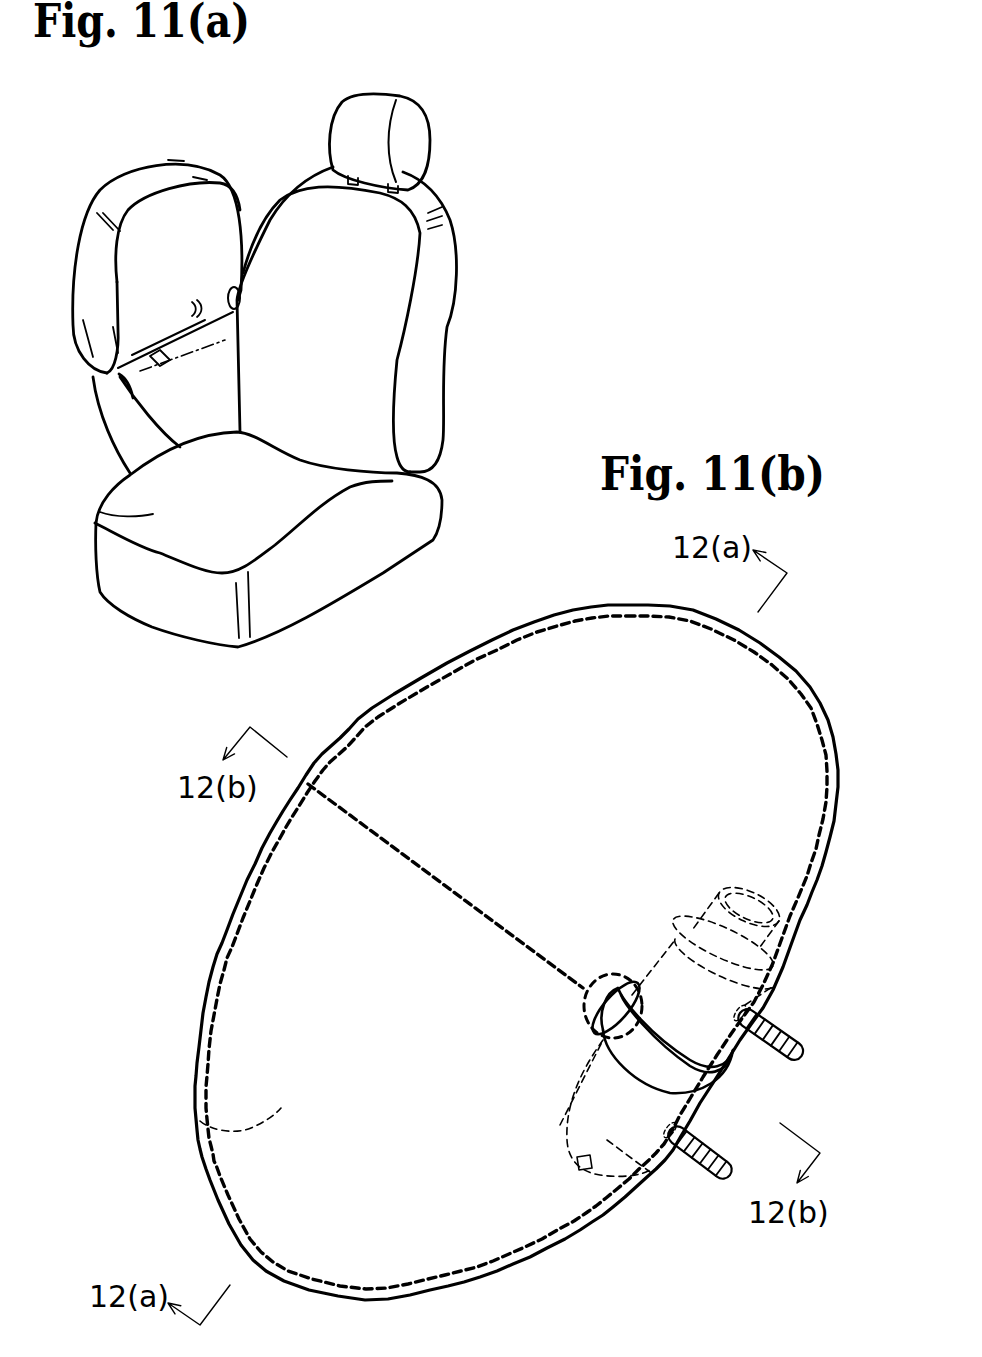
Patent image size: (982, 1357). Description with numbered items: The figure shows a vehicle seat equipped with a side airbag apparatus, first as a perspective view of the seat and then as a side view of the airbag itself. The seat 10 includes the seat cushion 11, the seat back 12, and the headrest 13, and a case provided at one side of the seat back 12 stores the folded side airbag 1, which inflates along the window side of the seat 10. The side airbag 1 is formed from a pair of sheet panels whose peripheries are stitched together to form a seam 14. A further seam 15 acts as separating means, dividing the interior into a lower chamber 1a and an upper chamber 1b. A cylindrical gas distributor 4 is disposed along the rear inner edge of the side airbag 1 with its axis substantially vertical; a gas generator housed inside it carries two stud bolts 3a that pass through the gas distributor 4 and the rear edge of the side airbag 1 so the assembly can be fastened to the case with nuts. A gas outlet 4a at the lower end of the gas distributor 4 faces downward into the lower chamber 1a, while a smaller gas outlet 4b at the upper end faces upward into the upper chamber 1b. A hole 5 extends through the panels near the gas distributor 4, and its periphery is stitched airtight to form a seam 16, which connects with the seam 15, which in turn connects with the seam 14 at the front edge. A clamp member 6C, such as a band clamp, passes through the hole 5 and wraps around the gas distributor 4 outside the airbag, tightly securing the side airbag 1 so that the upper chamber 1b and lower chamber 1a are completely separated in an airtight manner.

In FIG. 11A, the side airbag 1 is at (107, 163).
In FIG. 11B, the side airbag 1 is at (187, 936).
In FIG. 11B, the lower chamber 1a is at (200, 1121).
In FIG. 11B, the upper chamber 1b is at (535, 673).
In FIG. 11B, the stud bolts 3a is at (792, 1042).
In FIG. 11B, the gas distributor 4 is at (662, 950).
In FIG. 11B, the gas outlet 4a is at (597, 1150).
In FIG. 11B, the gas outlet 4b is at (750, 893).
In FIG. 11A, the hole 5 is at (233, 297).
In FIG. 11B, the hole 5 is at (620, 985).
In FIG. 11B, the clamp member 6C is at (640, 1068).
In FIG. 11A, the seat 10 is at (472, 385).
In FIG. 11A, the seat cushion 11 is at (105, 500).
In FIG. 11A, the seat back 12 is at (367, 298).
In FIG. 11A, the headrest 13 is at (380, 118).
In FIG. 11B, the seam 14 is at (595, 617).
In FIG. 11B, the seam 15 is at (443, 874).
In FIG. 11B, the seam 16 is at (587, 1023).